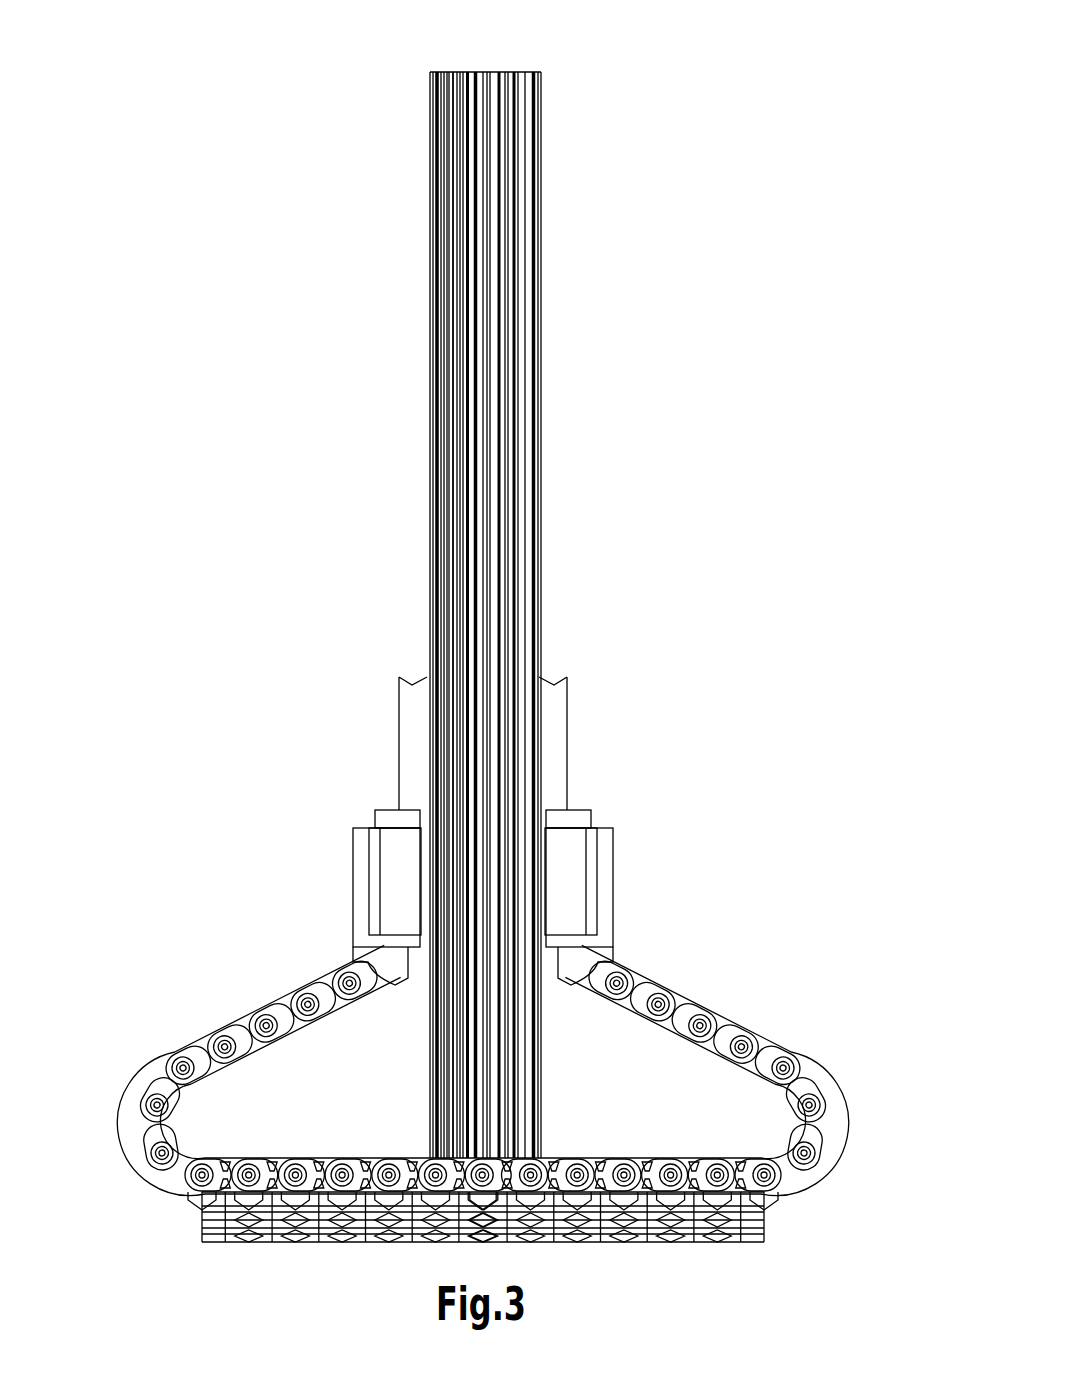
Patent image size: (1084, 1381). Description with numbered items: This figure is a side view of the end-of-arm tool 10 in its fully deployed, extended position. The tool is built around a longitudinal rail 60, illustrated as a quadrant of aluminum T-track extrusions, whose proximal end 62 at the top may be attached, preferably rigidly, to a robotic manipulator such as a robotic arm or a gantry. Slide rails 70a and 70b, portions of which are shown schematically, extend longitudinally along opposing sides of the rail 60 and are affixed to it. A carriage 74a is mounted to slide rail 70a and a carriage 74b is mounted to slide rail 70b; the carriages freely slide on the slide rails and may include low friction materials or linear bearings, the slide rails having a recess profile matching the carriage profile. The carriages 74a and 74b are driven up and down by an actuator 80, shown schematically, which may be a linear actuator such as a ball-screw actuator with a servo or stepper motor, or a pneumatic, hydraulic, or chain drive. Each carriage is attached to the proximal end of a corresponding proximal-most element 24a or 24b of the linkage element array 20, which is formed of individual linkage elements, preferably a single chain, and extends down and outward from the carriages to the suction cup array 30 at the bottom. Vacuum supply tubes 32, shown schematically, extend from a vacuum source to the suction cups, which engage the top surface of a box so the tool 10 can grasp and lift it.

The end-of-arm tool 10 is at (788, 627).
The linkage element array 20 is at (720, 1040).
The proximal-most element 24a is at (345, 970).
The proximal-most element 24b is at (625, 982).
The suction cup array 30 is at (640, 1240).
The vacuum supply tubes 32 is at (436, 1175).
The longitudinal rail 60 is at (525, 630).
The proximal end 62 is at (512, 72).
The slide rail 70a is at (417, 705).
The slide rail 70b is at (557, 705).
The carriage 74a is at (396, 850).
The carriage 74b is at (565, 855).
The actuator 80 is at (430, 190).